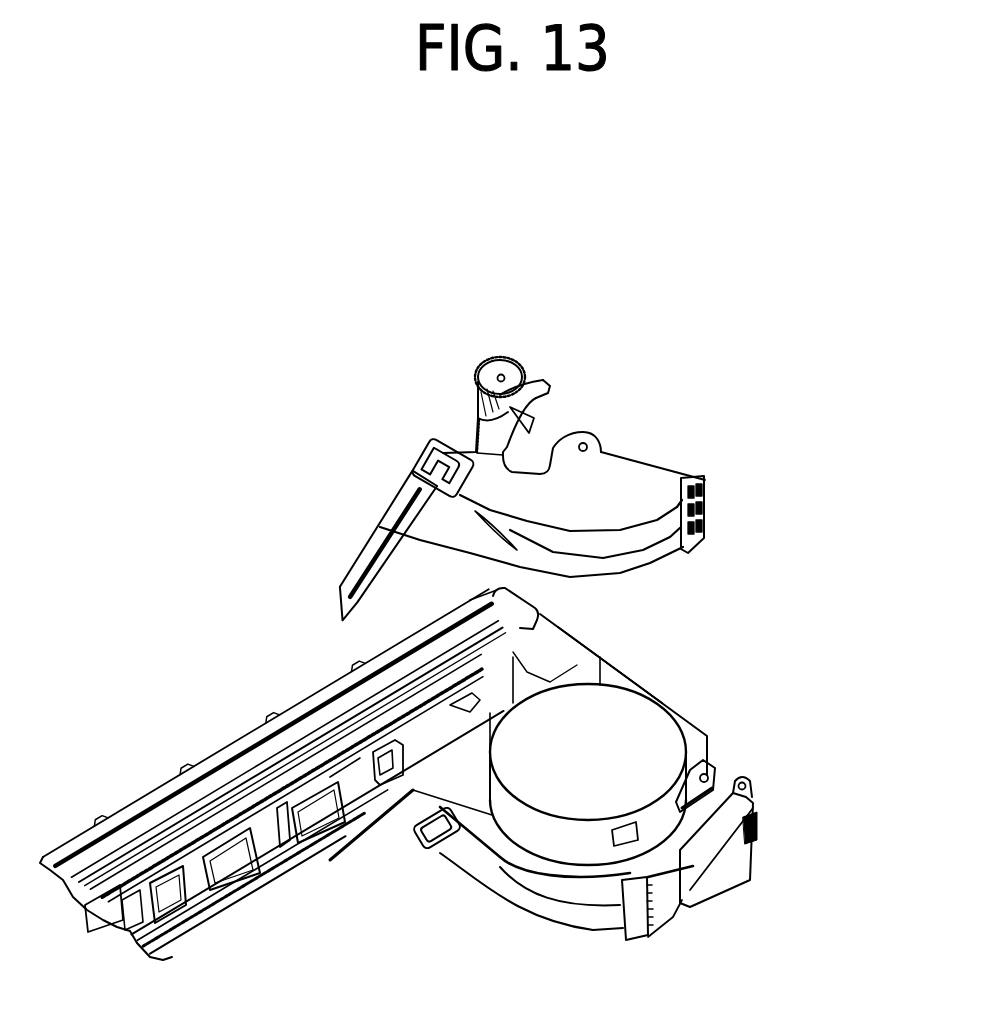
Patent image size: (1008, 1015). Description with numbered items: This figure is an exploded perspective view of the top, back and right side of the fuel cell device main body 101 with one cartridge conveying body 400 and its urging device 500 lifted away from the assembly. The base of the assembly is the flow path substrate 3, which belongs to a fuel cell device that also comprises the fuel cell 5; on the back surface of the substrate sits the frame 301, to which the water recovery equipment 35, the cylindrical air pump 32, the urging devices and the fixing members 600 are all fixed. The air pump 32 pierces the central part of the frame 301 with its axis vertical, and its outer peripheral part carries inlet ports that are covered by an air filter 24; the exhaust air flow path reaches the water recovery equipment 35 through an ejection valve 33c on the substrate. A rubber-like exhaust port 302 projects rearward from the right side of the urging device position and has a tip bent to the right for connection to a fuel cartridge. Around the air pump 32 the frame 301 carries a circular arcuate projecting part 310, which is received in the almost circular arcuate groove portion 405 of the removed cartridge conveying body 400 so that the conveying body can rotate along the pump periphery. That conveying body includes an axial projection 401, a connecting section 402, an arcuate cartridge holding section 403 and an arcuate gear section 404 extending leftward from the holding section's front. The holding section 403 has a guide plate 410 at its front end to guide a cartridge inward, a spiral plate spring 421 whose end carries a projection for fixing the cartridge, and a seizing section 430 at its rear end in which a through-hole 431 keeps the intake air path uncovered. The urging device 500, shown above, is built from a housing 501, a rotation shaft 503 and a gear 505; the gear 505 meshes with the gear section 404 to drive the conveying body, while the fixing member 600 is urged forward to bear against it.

The fuel cell device main body 101 is at (896, 475).
The cartridge conveying body 400 is at (700, 367).
The urging device 500 is at (550, 297).
The housing 501 is at (477, 395).
The rotation shaft 503 is at (487, 365).
The gear 505 is at (510, 364).
The gear section 404 is at (545, 372).
The axial projection 401 is at (580, 433).
The connecting section 402 is at (618, 478).
The seizing section 430 is at (680, 480).
The through-hole 431 is at (697, 533).
The plate spring 421 is at (433, 477).
The groove portion 405 is at (487, 533).
The guide plate 410 is at (347, 583).
The ejection valve 33c is at (497, 597).
The flow path substrate 3 is at (557, 605).
The cartridge holding section 403 is at (632, 557).
The water recovery equipment 35 is at (577, 642).
The exhaust port 302 is at (440, 728).
The fuel cell 5 is at (262, 752).
The air pump 32 is at (657, 723).
The frame 301 is at (710, 760).
The projecting part 310 is at (487, 827).
The air filter 24 is at (612, 834).
The fixing member 600 is at (697, 883).